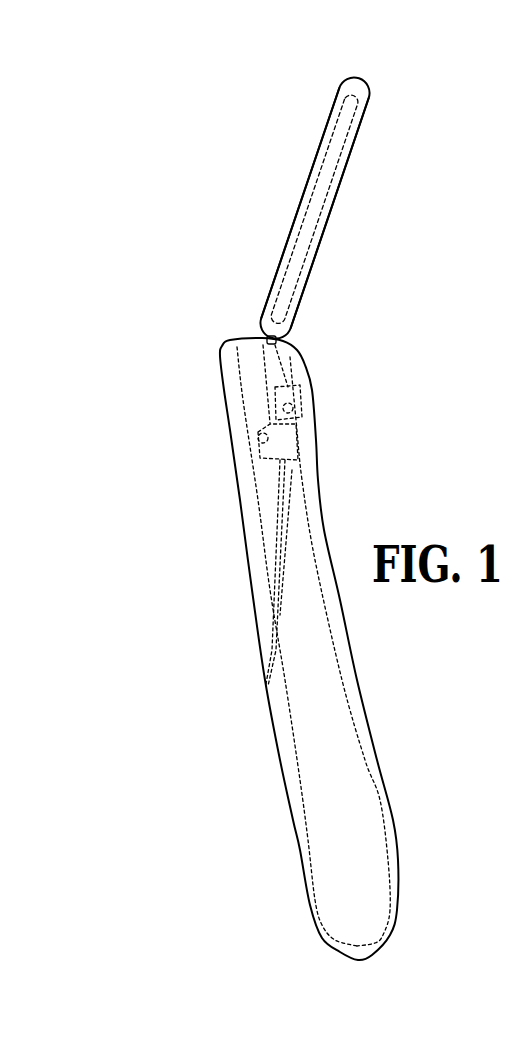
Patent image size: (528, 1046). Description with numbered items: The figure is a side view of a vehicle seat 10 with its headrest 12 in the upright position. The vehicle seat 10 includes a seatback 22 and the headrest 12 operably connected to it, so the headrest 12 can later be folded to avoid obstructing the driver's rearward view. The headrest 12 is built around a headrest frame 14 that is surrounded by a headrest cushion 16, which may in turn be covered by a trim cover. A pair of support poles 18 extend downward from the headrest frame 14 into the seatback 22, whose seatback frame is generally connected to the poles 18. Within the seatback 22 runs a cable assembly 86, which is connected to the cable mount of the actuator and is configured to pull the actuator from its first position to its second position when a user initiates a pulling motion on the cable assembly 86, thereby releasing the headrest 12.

The vehicle seat 10 is at (187, 173).
The headrest 12 is at (340, 83).
The headrest frame 14 is at (354, 98).
The headrest cushion 16 is at (343, 178).
The support poles 18 is at (264, 338).
The seatback 22 is at (225, 410).
The cable assembly 86 is at (267, 685).